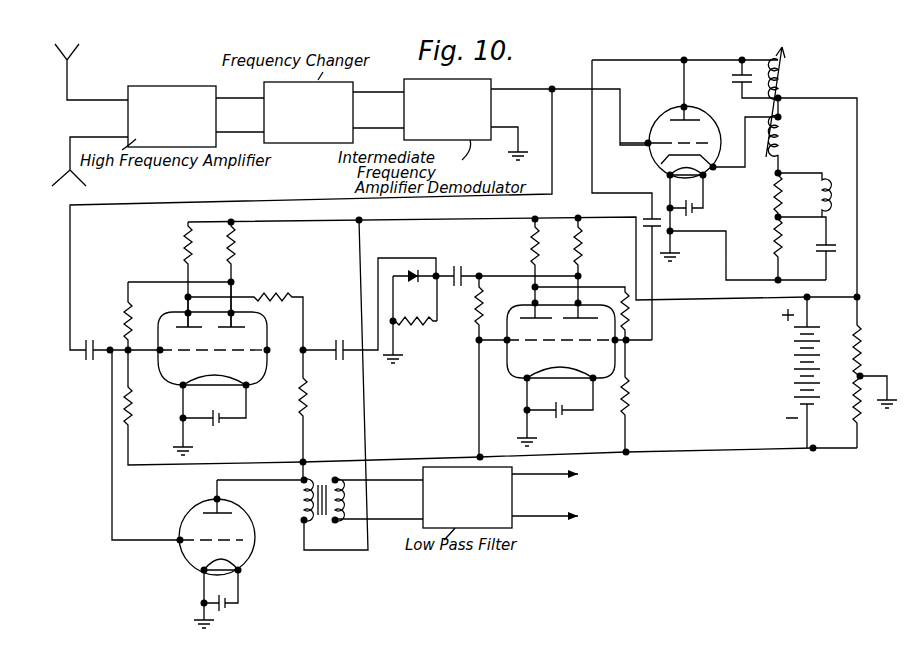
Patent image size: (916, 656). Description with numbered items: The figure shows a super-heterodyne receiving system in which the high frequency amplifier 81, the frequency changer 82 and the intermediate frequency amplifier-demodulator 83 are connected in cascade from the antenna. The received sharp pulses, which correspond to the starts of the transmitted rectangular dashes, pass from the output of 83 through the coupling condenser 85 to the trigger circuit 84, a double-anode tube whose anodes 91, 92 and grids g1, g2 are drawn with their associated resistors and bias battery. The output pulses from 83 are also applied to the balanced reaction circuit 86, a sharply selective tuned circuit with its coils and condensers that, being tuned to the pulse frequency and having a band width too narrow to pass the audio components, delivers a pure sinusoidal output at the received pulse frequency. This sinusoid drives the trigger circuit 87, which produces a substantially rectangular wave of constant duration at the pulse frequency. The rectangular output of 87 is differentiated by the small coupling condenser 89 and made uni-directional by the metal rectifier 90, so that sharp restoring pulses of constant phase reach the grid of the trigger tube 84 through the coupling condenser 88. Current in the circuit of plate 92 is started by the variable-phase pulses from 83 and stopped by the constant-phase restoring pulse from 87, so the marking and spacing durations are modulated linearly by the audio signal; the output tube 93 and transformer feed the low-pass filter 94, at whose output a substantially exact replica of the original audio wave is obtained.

The high frequency amplifier 81 is at (172, 116).
The frequency changer 82 is at (308, 112).
The intermediate frequency amplifier-demodulator 83 is at (447, 109).
The trigger circuit 84 is at (243, 359).
The coupling condenser 85 is at (88, 342).
The balanced reaction circuit 86 is at (690, 107).
The trigger circuit 87 is at (617, 355).
The coupling condenser 88 is at (339, 340).
The small coupling condenser 89 is at (463, 268).
The metal rectifier 90 is at (415, 310).
The first anode 91 is at (185, 330).
The plate 92 is at (234, 322).
The output amplifier tube 93 is at (245, 506).
The low-pass filter 94 is at (467, 497).
The first grid g1 is at (185, 352).
The second grid g2 is at (245, 350).